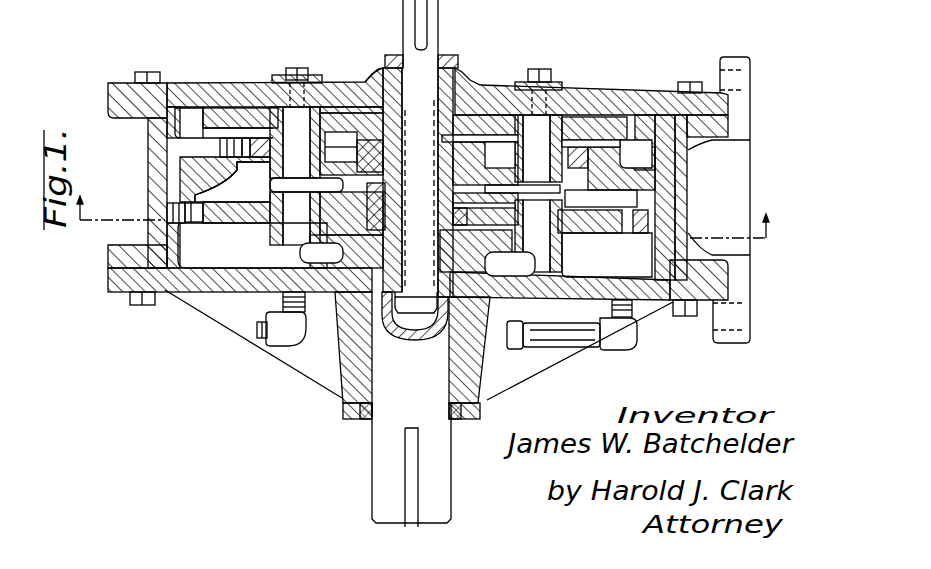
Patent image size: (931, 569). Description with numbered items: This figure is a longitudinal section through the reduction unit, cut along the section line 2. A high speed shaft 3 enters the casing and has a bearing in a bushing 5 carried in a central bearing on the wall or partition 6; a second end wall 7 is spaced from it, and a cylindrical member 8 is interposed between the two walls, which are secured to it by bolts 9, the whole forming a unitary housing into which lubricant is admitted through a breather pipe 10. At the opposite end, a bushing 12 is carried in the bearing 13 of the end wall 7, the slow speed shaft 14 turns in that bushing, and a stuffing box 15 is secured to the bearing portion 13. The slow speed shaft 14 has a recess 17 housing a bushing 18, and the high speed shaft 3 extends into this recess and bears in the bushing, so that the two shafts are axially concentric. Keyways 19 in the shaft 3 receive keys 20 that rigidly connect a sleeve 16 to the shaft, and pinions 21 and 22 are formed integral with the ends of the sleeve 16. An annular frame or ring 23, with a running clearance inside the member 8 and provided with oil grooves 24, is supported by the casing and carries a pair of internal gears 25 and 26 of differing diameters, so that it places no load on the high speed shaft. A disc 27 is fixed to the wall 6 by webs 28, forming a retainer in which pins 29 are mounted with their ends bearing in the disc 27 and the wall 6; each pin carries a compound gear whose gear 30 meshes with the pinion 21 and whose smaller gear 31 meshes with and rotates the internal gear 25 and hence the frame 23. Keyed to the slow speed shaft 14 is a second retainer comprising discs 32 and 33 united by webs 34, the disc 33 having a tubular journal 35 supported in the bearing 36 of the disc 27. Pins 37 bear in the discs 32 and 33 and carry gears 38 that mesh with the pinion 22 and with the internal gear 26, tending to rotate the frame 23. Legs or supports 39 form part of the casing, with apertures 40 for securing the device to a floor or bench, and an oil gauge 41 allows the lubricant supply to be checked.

The section line 2 is at (425, 211).
The high speed shaft 3 is at (412, 20).
The bushing 5 is at (398, 70).
The wall or partition 6 is at (345, 130).
The second end wall 7 is at (200, 292).
The cylindrical member 8 is at (157, 193).
The bolts 9 is at (142, 72).
The breather pipe 10 is at (287, 333).
The bushing 12 is at (462, 360).
The bearing 13 is at (494, 396).
The slow speed shaft 14 is at (438, 458).
The stuffing box 15 is at (348, 420).
The sleeve 16 is at (390, 180).
The recess 17 is at (424, 338).
The bushing 18 is at (404, 312).
The keyways 19 is at (402, 110).
The keys 20 is at (402, 157).
The pinion 21 is at (390, 117).
The pinion 22 is at (390, 217).
The annular frame or ring 23 is at (182, 226).
The oil grooves 24 is at (677, 183).
The internal gear 25 is at (253, 138).
The internal gear 26 is at (198, 222).
The disc 27 is at (283, 172).
The webs 28 is at (335, 108).
The pins 29 is at (290, 68).
The gear 30 is at (222, 108).
The gear 31 is at (300, 75).
The disc 32 is at (318, 300).
The disc 33 is at (262, 226).
The webs 34 is at (505, 236).
The tubular journal 35 is at (388, 92).
The bearing 36 is at (372, 55).
The pins 37 is at (453, 193).
The gears 38 is at (272, 207).
The legs or supports 39 is at (745, 132).
The apertures 40 is at (750, 80).
The oil gauge 41 is at (577, 350).